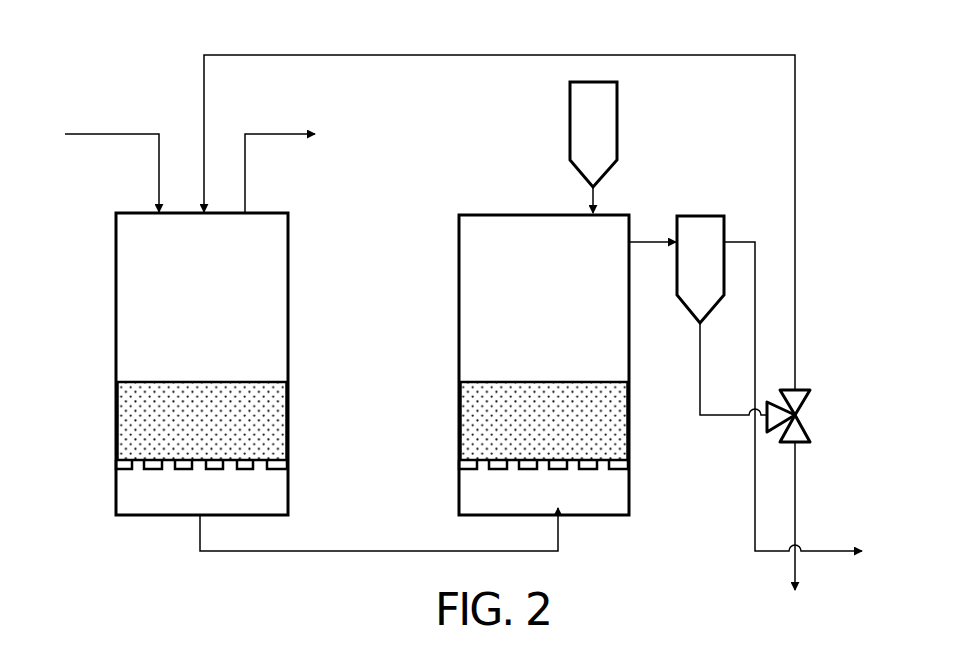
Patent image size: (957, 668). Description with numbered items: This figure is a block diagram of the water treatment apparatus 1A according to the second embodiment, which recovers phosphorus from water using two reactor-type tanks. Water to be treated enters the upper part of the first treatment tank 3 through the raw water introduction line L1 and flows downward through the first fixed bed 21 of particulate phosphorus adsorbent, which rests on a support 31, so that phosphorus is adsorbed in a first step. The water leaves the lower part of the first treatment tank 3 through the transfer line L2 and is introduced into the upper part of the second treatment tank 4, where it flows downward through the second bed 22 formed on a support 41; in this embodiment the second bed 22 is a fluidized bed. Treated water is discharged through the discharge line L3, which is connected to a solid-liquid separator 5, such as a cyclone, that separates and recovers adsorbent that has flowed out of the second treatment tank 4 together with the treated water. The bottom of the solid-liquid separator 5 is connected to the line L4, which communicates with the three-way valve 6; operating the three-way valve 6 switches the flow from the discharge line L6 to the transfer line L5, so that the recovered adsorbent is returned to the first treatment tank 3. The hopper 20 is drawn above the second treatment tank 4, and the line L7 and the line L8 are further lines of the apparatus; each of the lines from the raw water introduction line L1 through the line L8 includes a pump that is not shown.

The water treatment apparatus 1A is at (181, 79).
The first treatment tank 3 is at (115, 270).
The second treatment tank 4 is at (459, 270).
The solid-liquid separator 5 is at (710, 216).
The three-way valve 6 is at (810, 425).
The hopper 20 is at (618, 115).
The first fixed bed 21 is at (122, 434).
The second bed 22 is at (460, 436).
The support 31 is at (150, 470).
The support 41 is at (494, 470).
The raw water introduction line L1 is at (106, 133).
The transfer line L2 is at (372, 554).
The discharge line L3 is at (649, 240).
The line L4 is at (713, 420).
The transfer line L5 is at (798, 128).
The discharge line L6 is at (798, 495).
The line L7 is at (751, 518).
The line L8 is at (277, 133).